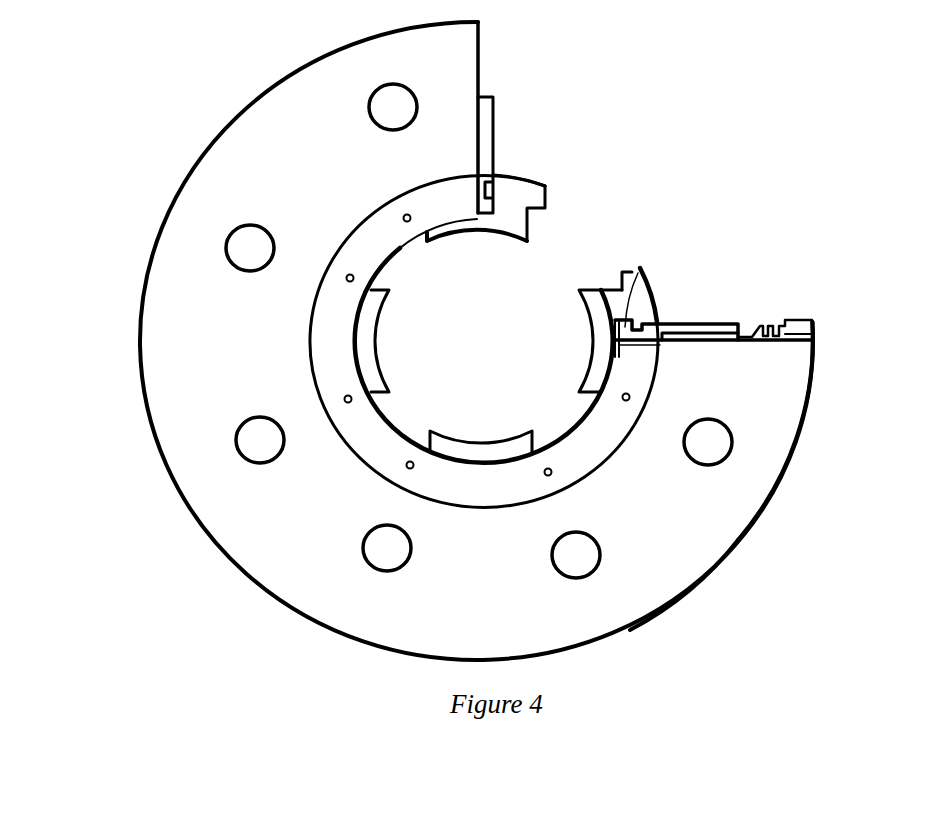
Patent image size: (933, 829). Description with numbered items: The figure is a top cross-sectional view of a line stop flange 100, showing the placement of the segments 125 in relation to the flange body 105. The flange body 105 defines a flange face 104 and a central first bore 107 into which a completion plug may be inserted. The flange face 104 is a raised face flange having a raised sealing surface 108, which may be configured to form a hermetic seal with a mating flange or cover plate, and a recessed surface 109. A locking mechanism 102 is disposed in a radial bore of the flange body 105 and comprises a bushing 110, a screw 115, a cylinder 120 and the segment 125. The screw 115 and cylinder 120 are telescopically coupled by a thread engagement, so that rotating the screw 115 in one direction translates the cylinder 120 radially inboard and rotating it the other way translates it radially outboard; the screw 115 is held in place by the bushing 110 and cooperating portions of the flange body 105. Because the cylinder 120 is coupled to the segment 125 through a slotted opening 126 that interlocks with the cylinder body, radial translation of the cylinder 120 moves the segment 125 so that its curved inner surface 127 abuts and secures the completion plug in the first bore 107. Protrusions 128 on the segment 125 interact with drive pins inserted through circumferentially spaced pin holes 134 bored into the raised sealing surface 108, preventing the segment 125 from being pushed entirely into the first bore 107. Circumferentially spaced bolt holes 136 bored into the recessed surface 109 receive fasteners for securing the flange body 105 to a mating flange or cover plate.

The line stop flange 100 is at (672, 109).
The locking mechanism 102 is at (760, 289).
The flange face 104 is at (735, 505).
The flange body 105 is at (673, 598).
The first bore 107 is at (390, 424).
The raised sealing surface 108 is at (364, 463).
The recessed surface 109 is at (777, 442).
The bushing 110 is at (812, 318).
The screw 115 is at (787, 343).
The cylinder 120 is at (678, 320).
The segment 125 is at (548, 192).
The slotted opening 126 is at (634, 268).
The curved inner surface 127 is at (597, 338).
The protrusions 128 is at (563, 218).
The pin holes 134 is at (345, 399).
The bolt holes 136 is at (375, 128).